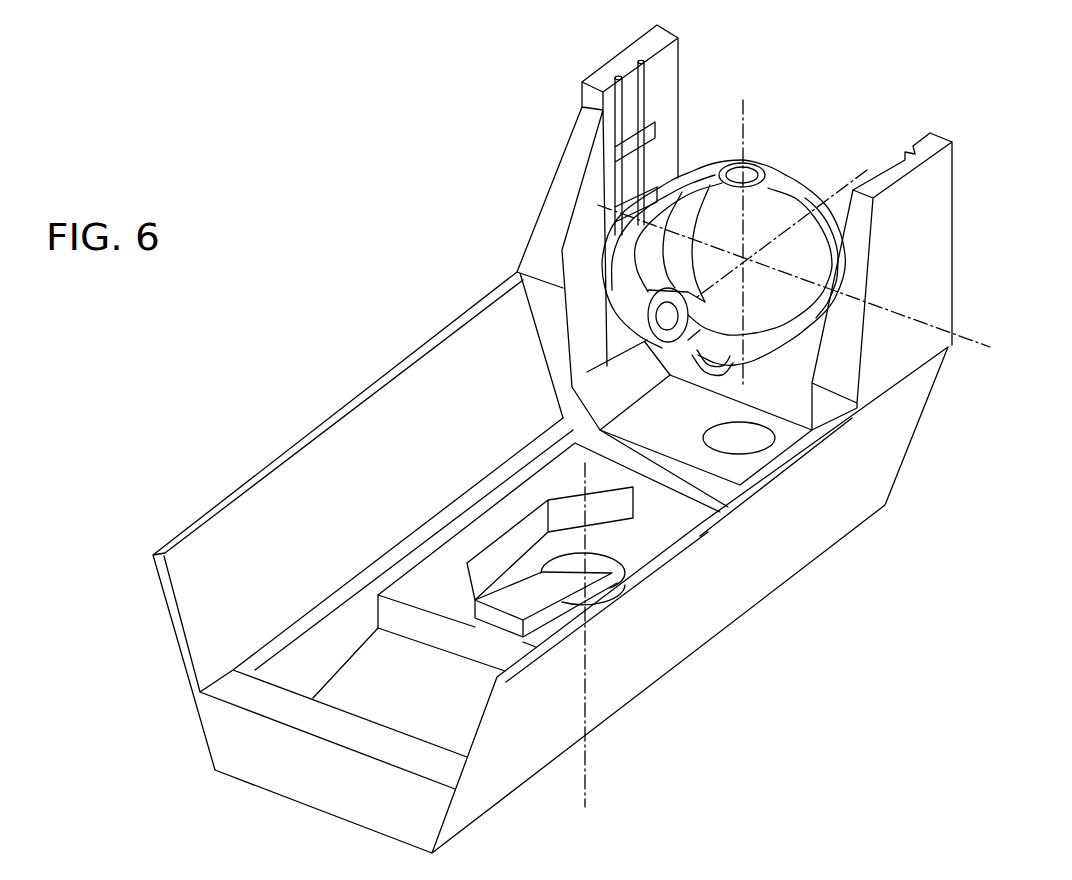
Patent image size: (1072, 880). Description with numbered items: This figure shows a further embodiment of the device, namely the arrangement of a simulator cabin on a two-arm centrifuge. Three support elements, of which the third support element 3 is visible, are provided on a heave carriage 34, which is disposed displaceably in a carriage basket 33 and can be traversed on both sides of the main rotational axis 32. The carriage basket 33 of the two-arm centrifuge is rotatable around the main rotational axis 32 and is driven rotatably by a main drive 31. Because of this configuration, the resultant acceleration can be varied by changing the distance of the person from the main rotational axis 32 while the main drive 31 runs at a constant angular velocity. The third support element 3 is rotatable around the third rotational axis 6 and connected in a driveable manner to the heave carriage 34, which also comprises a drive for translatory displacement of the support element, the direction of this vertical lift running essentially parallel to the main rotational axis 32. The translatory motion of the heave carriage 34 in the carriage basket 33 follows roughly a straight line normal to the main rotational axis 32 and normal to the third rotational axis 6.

The third support element 3 is at (806, 215).
The third rotational axis 6 is at (930, 330).
The main drive 31 is at (622, 585).
The main rotational axis 32 is at (596, 722).
The carriage basket 33 is at (867, 448).
The heave carriage 34 is at (908, 215).